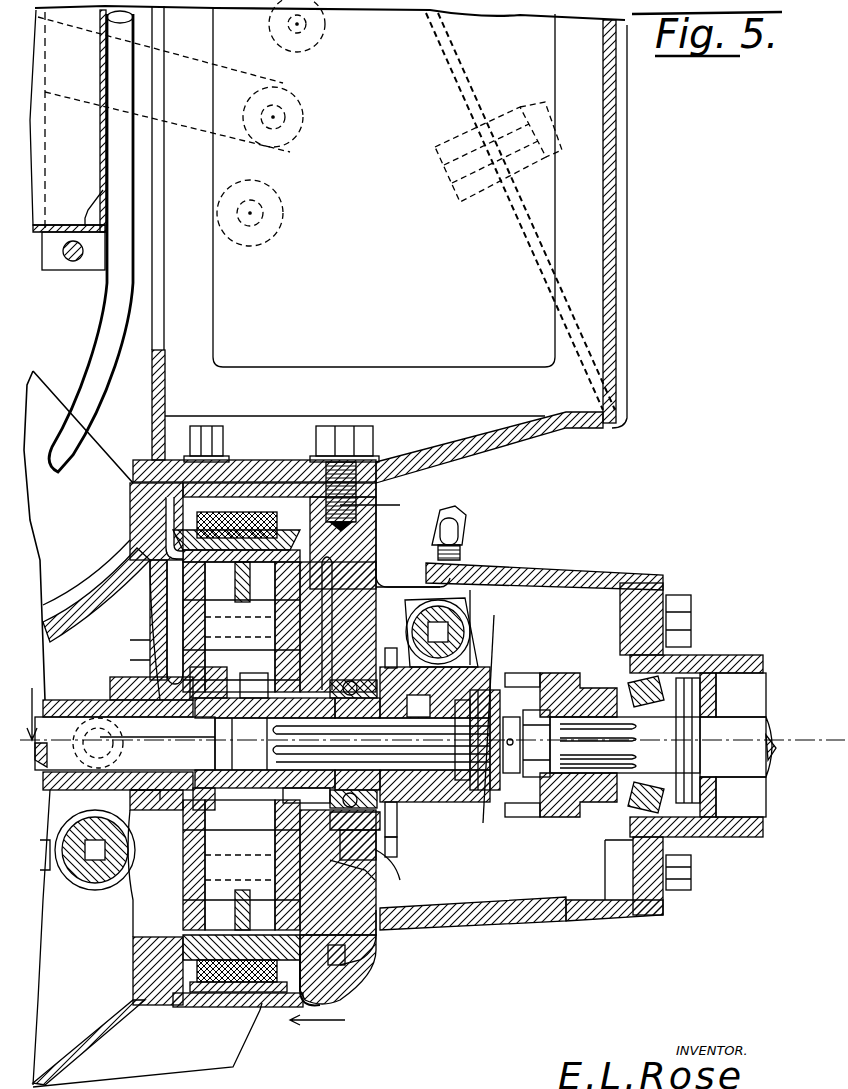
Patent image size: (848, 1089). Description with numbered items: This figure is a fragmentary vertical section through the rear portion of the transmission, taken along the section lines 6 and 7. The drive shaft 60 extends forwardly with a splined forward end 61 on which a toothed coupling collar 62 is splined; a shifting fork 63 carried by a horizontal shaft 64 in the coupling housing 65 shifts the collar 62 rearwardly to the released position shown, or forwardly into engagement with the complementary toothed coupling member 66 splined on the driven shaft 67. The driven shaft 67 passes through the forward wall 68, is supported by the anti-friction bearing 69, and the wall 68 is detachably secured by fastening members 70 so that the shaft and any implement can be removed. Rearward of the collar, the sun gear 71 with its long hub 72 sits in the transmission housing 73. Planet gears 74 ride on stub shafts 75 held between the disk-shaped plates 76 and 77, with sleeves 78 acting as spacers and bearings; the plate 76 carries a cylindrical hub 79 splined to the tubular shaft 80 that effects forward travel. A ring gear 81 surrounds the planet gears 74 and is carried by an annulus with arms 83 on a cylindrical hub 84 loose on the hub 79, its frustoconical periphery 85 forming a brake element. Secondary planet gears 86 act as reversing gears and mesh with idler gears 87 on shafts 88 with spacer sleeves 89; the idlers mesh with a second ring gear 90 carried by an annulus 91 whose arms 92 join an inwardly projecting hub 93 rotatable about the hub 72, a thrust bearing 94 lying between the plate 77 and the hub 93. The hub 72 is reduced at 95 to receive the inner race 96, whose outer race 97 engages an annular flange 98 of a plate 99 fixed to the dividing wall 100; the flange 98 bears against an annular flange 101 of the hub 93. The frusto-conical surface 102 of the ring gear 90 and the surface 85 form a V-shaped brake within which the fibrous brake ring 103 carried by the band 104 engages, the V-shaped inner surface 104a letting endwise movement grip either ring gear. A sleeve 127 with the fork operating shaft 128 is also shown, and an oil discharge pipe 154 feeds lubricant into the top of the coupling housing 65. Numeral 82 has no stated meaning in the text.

The section line 6- 6 is at (263, 668).
The section line 7- 7 is at (352, 762).
The drive shaft 60 is at (68, 720).
The splined forward end 61 is at (475, 772).
The toothed coupling collar 62 is at (468, 783).
The shifting fork 63 is at (410, 672).
The shaft 64 is at (446, 620).
The coupling housing 65 is at (575, 562).
The complementary toothed coupling member 66 is at (546, 830).
The driven shaft 67 is at (765, 736).
The forward wall 68 is at (622, 840).
The anti-friction bearing 69 is at (642, 790).
The fastening members 70 is at (692, 866).
The gear or pinion 71 is at (265, 765).
The hub 72 is at (347, 743).
The transmission housing 73 is at (345, 986).
The planet gears 74 is at (200, 668).
The stub shafts 75 is at (183, 623).
The disk-shaped plate 76 is at (190, 600).
The disk-shaped plate 77 is at (320, 615).
The sleeve 78 is at (190, 589).
The cylindrical hub 79 is at (125, 743).
The tubular shaft 80 is at (70, 777).
The ring gear 81 is at (184, 528).
The passage 82 is at (178, 550).
The annulus / radially arranged arms 83 is at (152, 882).
The cylindrical hub 84 is at (150, 818).
The frustoconical periphery 85 is at (232, 528).
The secondary planet gears 86 is at (240, 627).
The idler gears 87 is at (234, 830).
The shafts 88 is at (233, 855).
The spacer sleeves 89 is at (241, 865).
The ring gear 90 is at (262, 1004).
The annulus 91 is at (345, 955).
The radially arranged arms 92 is at (366, 930).
The inwardly projecting hub 93 is at (293, 790).
The thrust bearing 94 is at (265, 718).
The reduced diameter portion 95 is at (384, 715).
The inner race 96 is at (372, 823).
The outer race 97 is at (372, 854).
The annular flange 98 is at (367, 882).
The plate 99 is at (411, 874).
The dividing wall 100 is at (376, 597).
The annular flange 101 is at (411, 840).
The frusto-conical surface 102 is at (313, 996).
The fibrous brake ring 103 is at (205, 977).
The band 104 is at (222, 993).
The V-shaped inner surface 104a is at (185, 974).
The sleeve 127 is at (155, 907).
The fork operating shaft 128 is at (110, 868).
The oil discharge pipe 154 is at (448, 541).